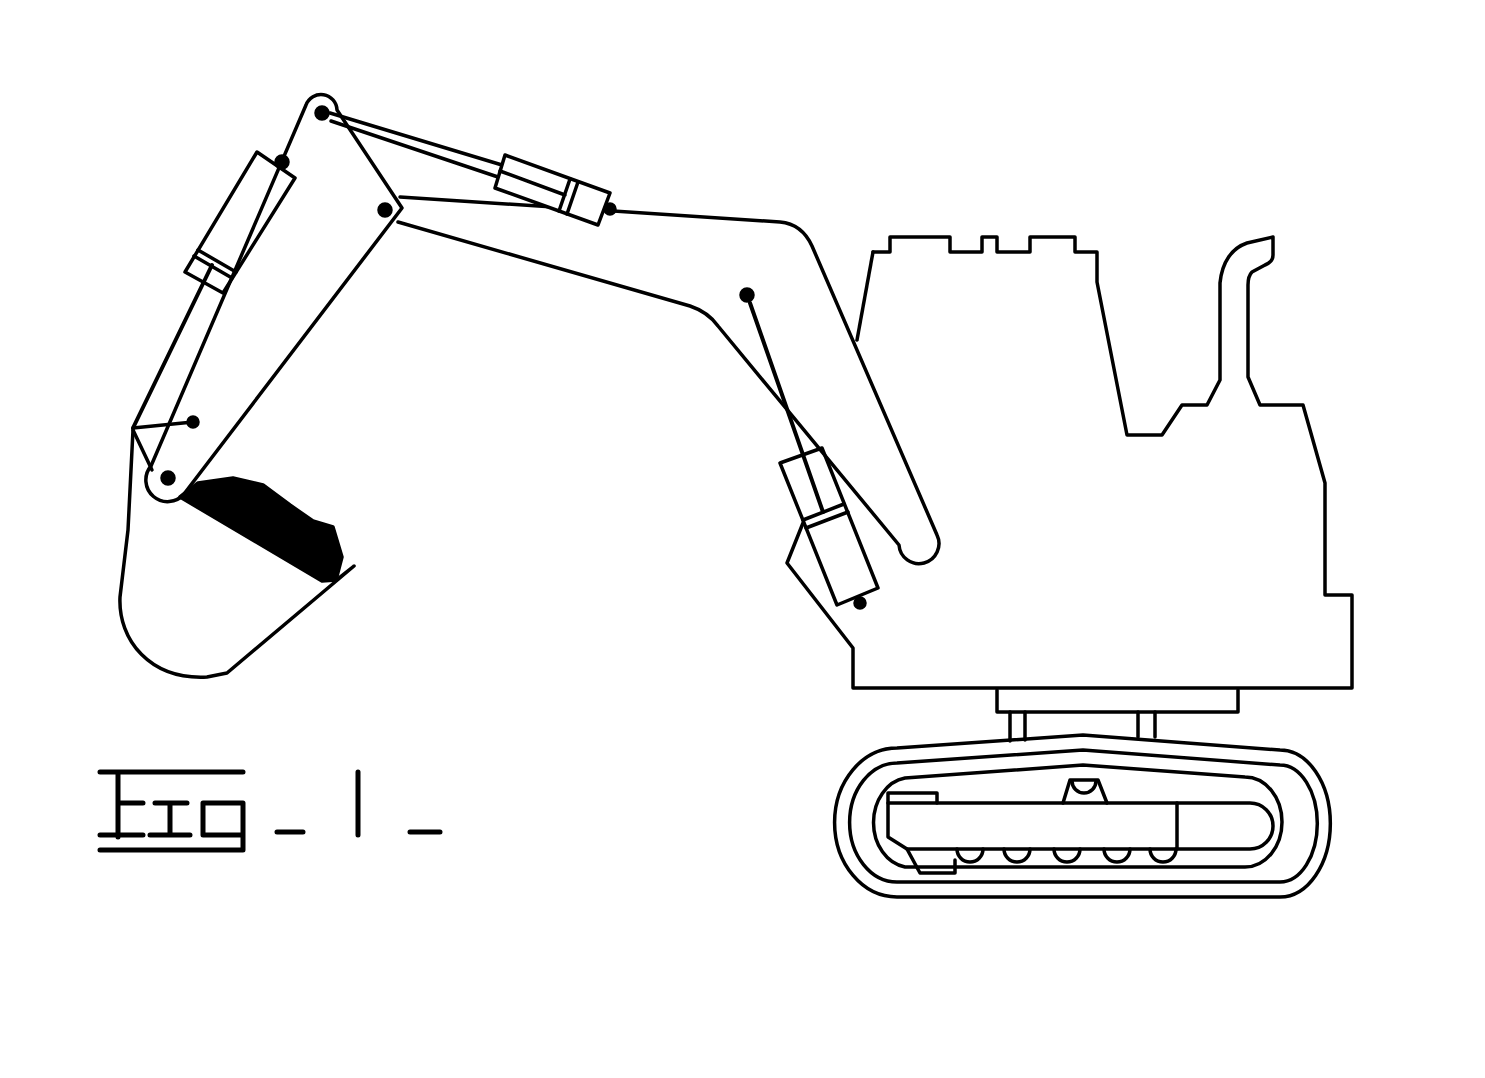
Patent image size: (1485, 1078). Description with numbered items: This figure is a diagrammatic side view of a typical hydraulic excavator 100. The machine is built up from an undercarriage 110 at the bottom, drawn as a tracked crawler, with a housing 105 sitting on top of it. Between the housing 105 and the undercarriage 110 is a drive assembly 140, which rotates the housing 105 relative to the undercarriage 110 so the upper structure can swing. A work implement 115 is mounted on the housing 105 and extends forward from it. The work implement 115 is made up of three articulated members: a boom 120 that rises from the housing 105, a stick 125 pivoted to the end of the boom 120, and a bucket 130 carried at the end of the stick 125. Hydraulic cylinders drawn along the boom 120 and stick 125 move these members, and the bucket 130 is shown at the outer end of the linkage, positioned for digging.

The excavator 100 is at (1277, 178).
The housing 105 is at (1088, 559).
The undercarriage 110 is at (1337, 825).
The work implement 115 is at (473, 120).
The boom 120 is at (722, 215).
The stick 125 is at (318, 328).
The bucket 130 is at (121, 603).
The drive assembly 140 is at (1280, 730).